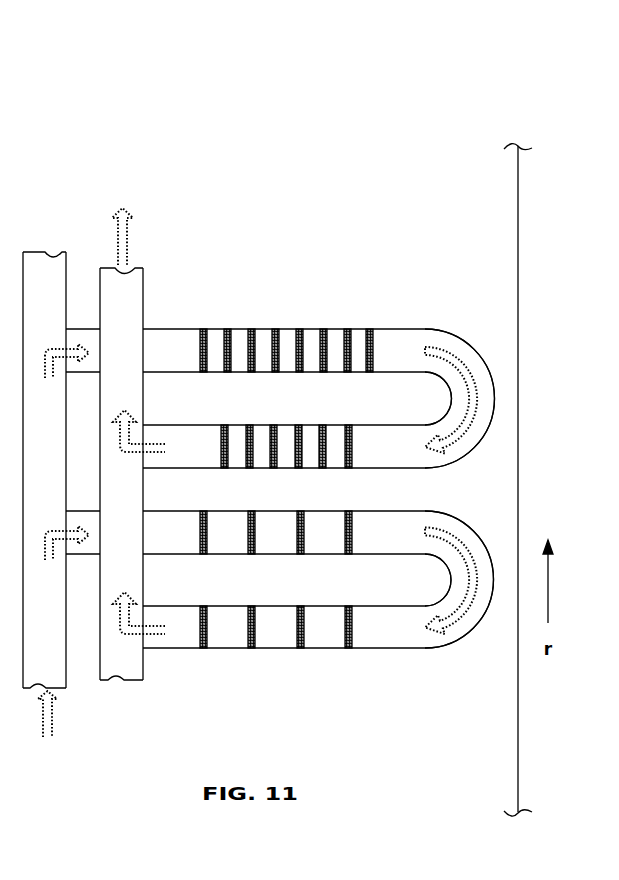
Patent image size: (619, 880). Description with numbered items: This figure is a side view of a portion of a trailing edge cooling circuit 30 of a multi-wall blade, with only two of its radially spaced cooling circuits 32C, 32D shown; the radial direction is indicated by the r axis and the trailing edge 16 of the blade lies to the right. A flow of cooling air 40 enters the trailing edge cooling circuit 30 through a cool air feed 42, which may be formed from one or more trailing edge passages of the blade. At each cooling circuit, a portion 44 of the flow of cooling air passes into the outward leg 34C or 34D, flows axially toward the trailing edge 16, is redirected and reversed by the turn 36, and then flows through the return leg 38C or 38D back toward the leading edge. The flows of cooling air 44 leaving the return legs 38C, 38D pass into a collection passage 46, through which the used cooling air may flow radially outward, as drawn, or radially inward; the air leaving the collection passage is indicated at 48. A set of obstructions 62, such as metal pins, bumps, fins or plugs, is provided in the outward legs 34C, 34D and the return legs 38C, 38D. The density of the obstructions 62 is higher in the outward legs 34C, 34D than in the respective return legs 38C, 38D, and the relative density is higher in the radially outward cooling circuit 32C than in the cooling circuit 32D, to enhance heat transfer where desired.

The trailing edge 16 is at (545, 752).
The trailing edge cooling circuit 30 is at (225, 173).
The radially outward cooling circuit 32C is at (280, 375).
The cooling circuit 32D is at (280, 607).
The outward leg 34C is at (168, 328).
The outward leg 34D is at (225, 511).
The turn 36 is at (482, 360).
The return leg 38C is at (398, 470).
The return leg 38D is at (170, 649).
The flow of cooling air 40 is at (53, 722).
The cool air feed 42 is at (50, 251).
The portion of the flow of cooling air 44 is at (53, 350).
The collection passage 46 is at (145, 289).
The outlet flow 48 is at (128, 222).
The obstructions 62 is at (255, 372).